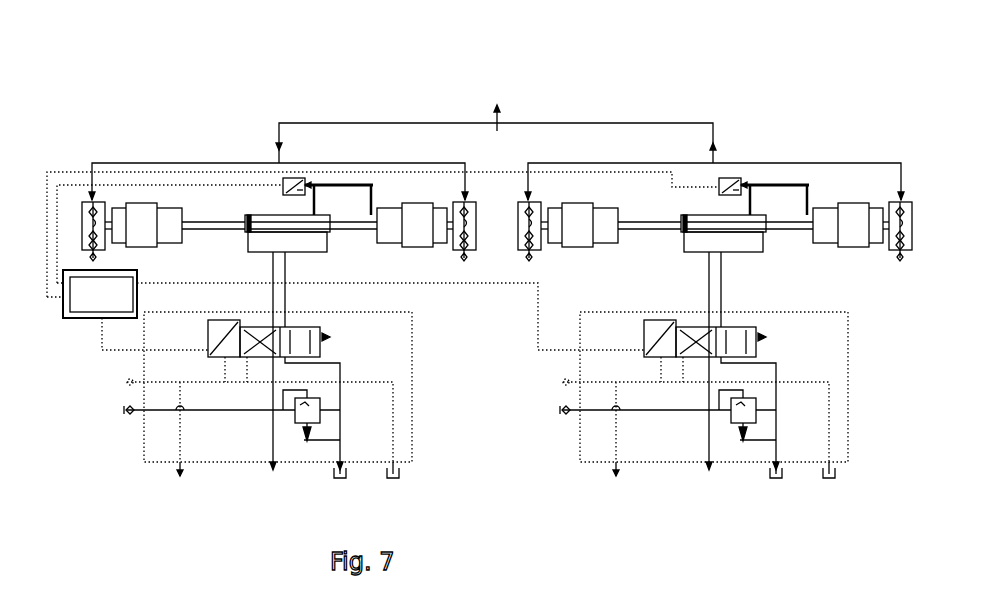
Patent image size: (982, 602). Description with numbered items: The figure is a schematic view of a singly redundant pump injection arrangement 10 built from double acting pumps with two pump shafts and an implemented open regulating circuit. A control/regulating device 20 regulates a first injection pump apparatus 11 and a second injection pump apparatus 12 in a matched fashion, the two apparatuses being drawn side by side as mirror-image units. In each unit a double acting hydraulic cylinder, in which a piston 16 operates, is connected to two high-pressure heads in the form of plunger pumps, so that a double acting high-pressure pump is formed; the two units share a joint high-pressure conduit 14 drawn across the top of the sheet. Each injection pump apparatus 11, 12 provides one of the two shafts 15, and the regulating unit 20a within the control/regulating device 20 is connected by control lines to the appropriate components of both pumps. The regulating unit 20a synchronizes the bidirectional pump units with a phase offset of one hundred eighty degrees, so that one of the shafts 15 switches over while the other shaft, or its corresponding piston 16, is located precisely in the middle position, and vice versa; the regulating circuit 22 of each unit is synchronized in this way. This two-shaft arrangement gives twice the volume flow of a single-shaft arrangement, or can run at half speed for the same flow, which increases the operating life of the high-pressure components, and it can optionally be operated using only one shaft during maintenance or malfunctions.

The pump injection arrangement 10 is at (132, 43).
The first injection pump apparatus 11 is at (147, 152).
The second injection pump apparatus 12 is at (820, 152).
The joint high-pressure conduit 14 is at (494, 120).
The shaft 15 is at (222, 221).
The piston 16 is at (246, 216).
The control/regulating device 20 is at (80, 318).
The regulating unit 20a is at (101, 294).
The regulating circuit 22 is at (62, 172).